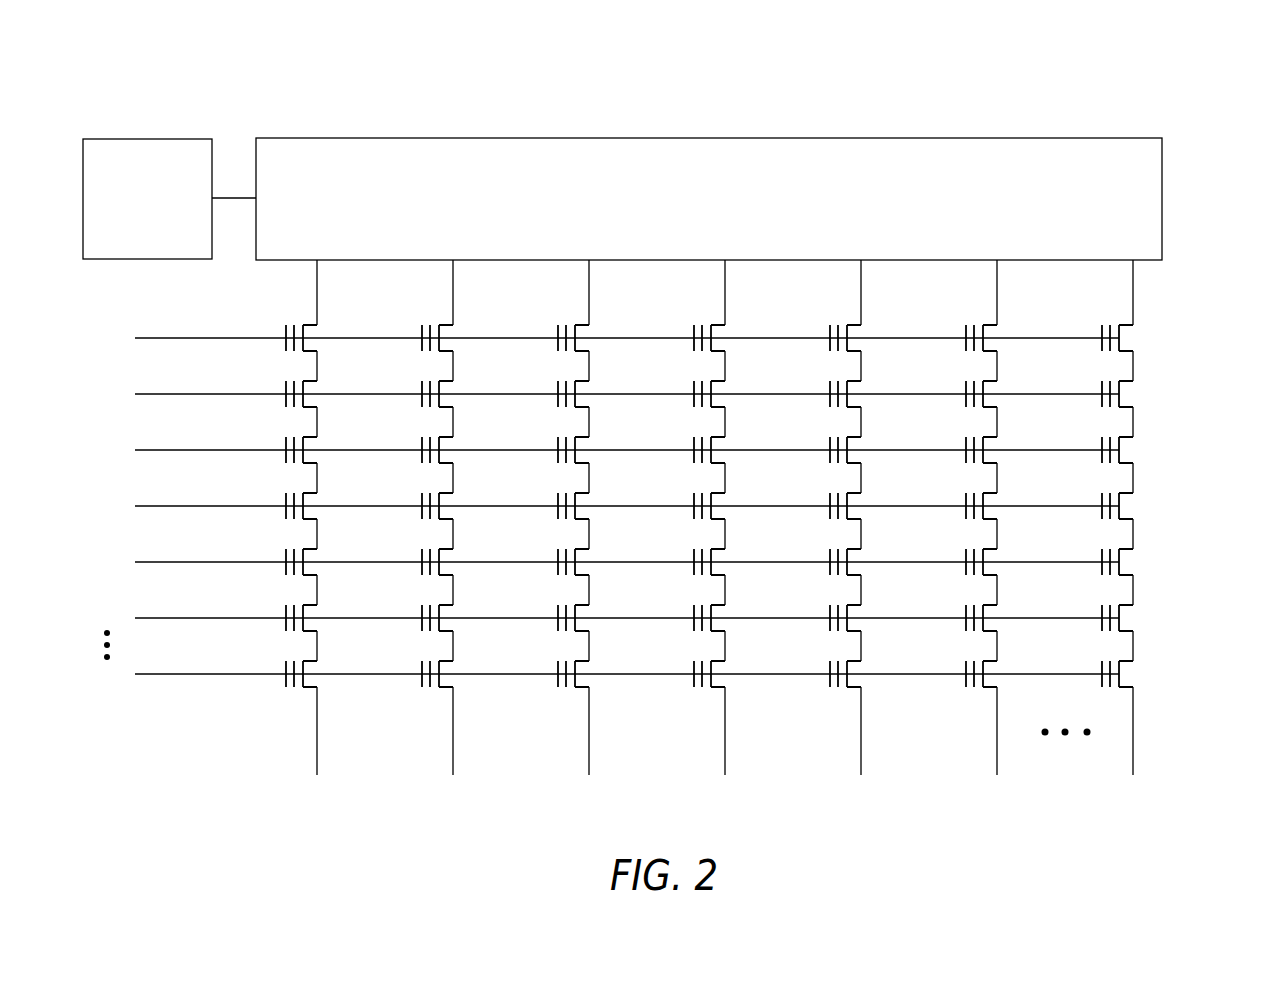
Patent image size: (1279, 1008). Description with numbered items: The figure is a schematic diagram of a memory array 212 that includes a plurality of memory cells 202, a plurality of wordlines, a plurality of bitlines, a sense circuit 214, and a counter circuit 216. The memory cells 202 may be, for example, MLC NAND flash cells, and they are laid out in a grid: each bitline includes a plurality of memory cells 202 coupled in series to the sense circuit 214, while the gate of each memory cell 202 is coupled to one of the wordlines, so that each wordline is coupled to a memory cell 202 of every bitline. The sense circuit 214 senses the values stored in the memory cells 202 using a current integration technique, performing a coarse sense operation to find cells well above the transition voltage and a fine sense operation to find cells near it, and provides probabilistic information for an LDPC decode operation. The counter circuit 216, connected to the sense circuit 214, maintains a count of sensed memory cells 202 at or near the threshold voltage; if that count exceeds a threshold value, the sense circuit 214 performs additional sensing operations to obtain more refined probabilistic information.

The memory cell 202 is at (303, 325).
The memory array 212 is at (1200, 103).
The sense circuit 214 is at (710, 138).
The counter circuit 216 is at (152, 137).